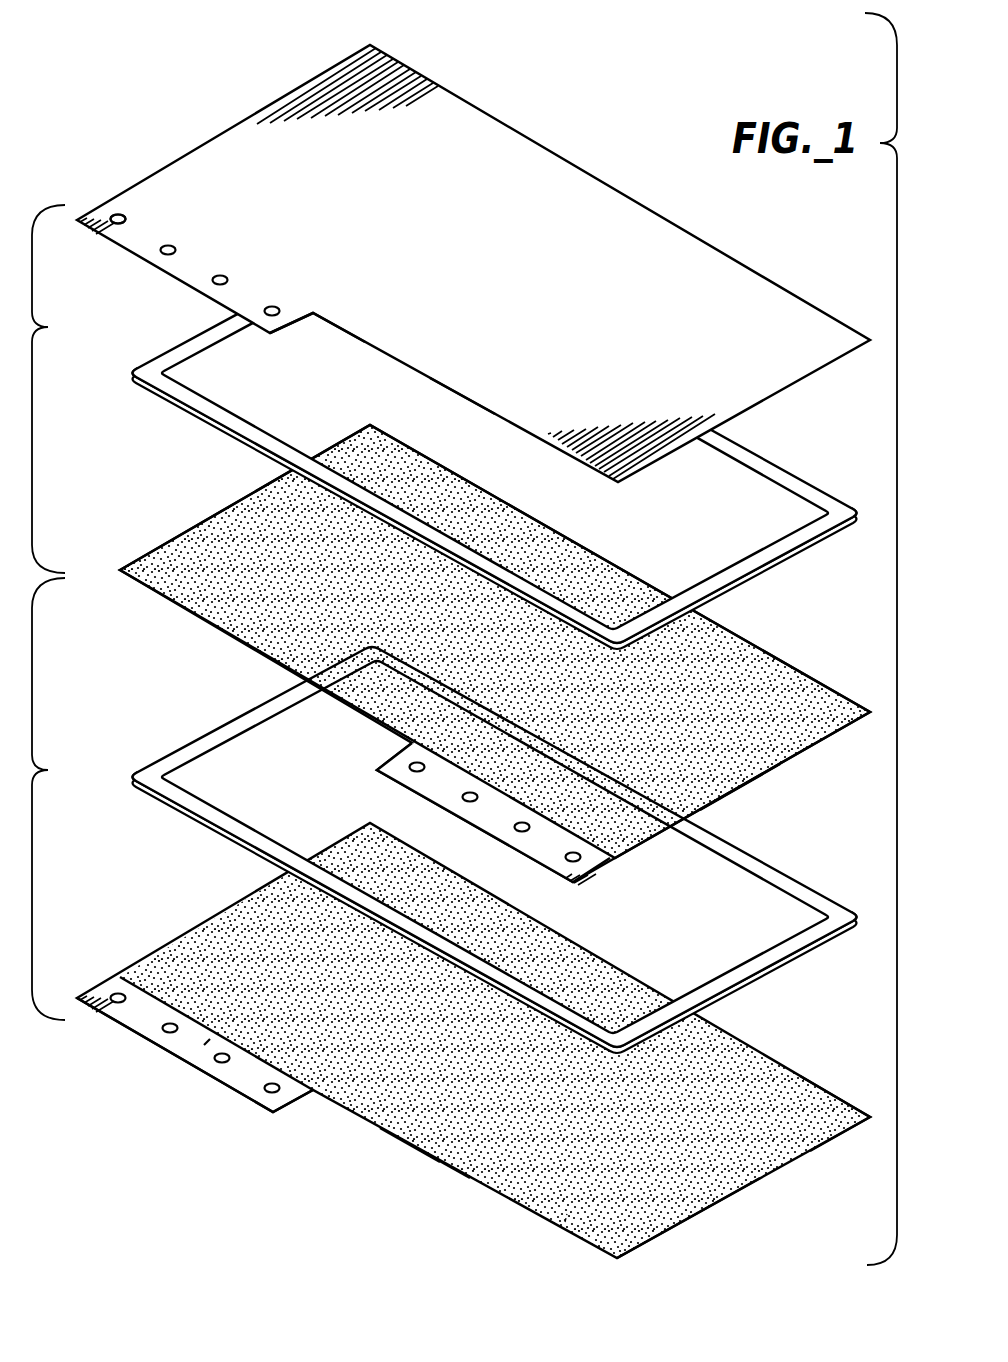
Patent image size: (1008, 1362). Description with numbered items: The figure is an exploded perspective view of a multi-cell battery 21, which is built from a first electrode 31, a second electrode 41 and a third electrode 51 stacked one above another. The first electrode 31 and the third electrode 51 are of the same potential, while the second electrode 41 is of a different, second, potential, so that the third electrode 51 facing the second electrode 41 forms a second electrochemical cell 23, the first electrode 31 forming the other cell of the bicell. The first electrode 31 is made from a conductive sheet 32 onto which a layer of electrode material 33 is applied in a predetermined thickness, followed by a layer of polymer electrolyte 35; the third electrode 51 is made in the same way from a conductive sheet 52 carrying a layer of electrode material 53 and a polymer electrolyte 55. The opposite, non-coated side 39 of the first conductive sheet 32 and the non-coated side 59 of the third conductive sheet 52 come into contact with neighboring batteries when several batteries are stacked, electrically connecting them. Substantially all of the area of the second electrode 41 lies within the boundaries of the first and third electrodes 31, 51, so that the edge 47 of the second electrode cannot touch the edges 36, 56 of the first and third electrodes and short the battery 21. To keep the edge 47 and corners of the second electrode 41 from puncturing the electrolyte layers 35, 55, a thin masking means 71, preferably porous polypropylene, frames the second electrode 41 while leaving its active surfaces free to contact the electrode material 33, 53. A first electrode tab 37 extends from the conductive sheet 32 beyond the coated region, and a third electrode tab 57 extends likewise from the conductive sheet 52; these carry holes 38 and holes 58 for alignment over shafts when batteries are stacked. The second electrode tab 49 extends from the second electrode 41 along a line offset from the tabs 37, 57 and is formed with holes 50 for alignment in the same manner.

The multi-cell battery 21 is at (176, 70).
The second electrochemical cell 23 is at (464, 639).
The first electrode 31 is at (742, 1226).
The conductive sheet 32 is at (498, 1195).
The layer of electrode material 33 is at (408, 1116).
The polymer electrolyte 35 is at (445, 1164).
The edge of the first electrode 36 is at (820, 1083).
The first electrode tab 37 is at (238, 1072).
The holes 38 is at (167, 1022).
The non-coated side of the first conductive sheet 39 is at (563, 1232).
The second electrode 41 is at (825, 757).
The edge of the second electrode 47 is at (815, 675).
The second electrode tab 49 is at (432, 814).
The holes 50 is at (434, 800).
The third electrode 51 is at (787, 398).
The conductive sheet 52 is at (497, 143).
The layer of electrode material 53 is at (361, 340).
The polymer electrolyte 55 is at (458, 397).
The edge of the third electrode 56 is at (578, 468).
The third electrode tab 57 is at (135, 238).
The holes 58 is at (162, 257).
The non-coated side of the third conductive sheet 59 is at (468, 252).
The masking means 71 is at (500, 648).